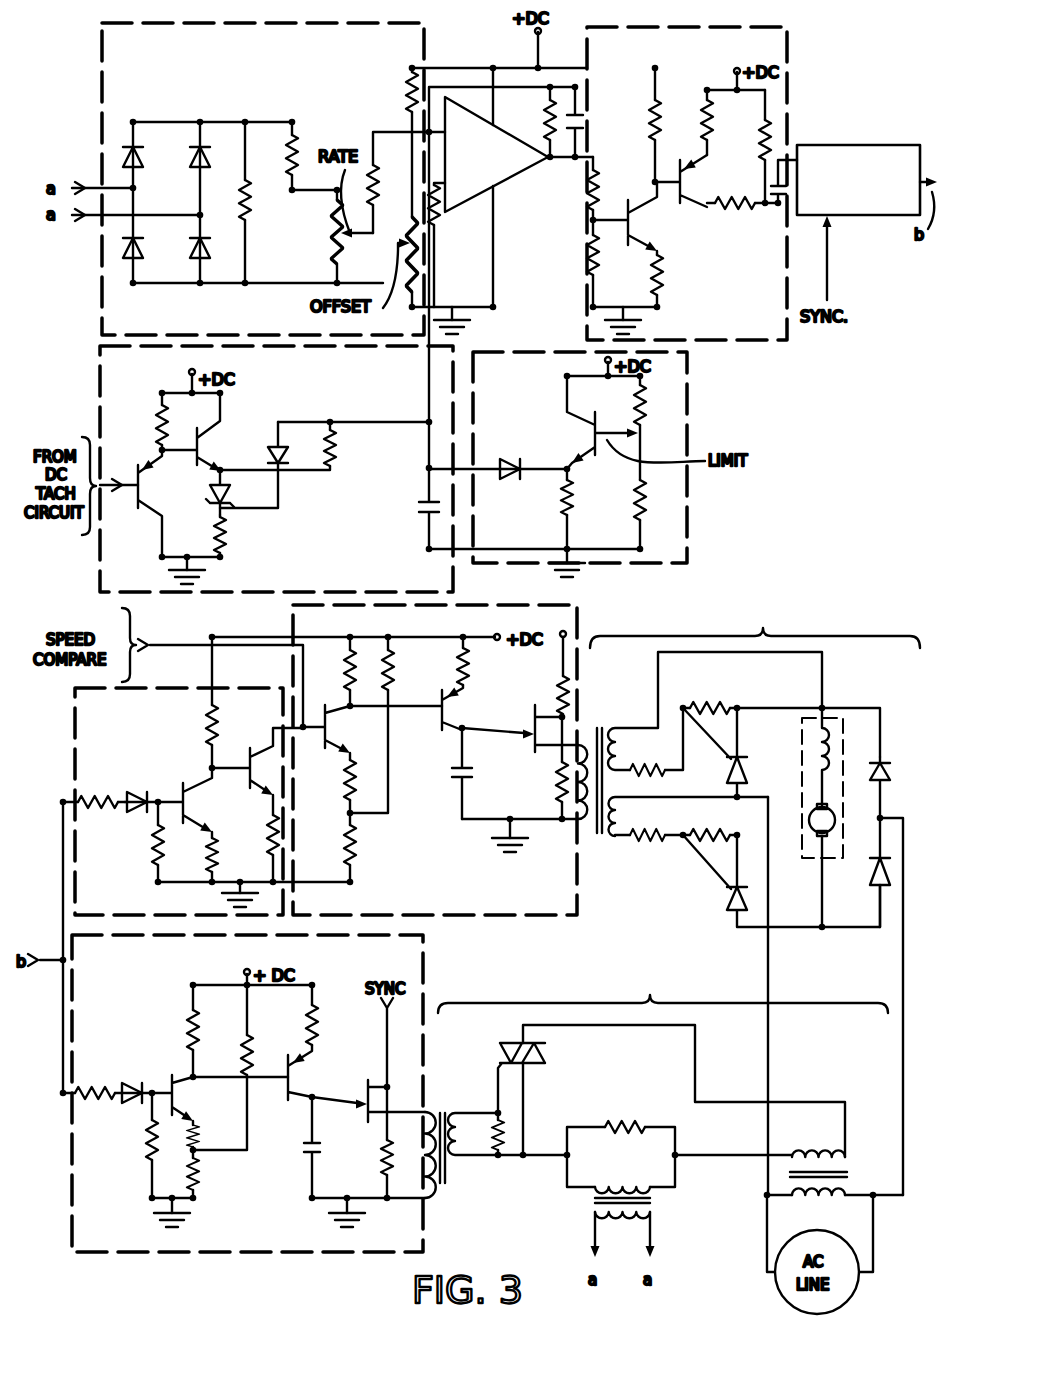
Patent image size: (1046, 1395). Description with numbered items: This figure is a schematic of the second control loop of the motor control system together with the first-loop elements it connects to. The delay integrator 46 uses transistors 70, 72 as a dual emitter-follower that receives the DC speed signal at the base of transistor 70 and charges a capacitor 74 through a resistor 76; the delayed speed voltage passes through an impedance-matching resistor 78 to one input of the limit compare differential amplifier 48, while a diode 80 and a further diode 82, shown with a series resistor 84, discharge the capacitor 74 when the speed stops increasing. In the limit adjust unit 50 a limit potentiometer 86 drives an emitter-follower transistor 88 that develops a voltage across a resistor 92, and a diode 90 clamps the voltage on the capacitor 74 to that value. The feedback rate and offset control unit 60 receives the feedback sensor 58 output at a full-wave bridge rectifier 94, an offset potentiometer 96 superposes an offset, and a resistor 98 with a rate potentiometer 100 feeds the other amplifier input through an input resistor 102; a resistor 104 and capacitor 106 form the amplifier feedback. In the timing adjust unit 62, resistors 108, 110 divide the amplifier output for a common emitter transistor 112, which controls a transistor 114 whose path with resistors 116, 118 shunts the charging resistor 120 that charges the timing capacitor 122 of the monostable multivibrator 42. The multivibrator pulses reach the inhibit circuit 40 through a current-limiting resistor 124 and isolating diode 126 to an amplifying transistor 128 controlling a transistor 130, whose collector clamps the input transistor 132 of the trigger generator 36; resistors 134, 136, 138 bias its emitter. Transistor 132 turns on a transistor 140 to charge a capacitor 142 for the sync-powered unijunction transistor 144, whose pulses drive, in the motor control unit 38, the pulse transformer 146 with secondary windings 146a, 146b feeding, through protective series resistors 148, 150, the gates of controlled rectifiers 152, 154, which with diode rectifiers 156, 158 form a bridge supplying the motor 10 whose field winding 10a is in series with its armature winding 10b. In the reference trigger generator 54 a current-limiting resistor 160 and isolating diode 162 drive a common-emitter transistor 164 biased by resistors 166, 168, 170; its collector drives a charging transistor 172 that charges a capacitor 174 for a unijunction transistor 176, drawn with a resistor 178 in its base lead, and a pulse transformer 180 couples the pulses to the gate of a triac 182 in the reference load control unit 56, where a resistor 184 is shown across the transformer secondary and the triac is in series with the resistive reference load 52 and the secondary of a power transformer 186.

The motor 10 is at (816, 804).
The field winding 10a is at (812, 752).
The armature winding 10b is at (812, 850).
The trigger generator 36 is at (580, 614).
The motor control unit 38 is at (755, 627).
The inhibit circuit 40 is at (186, 689).
The monostable multivibrator 42 is at (885, 145).
The delay integrator 46 is at (100, 397).
The limit compare differential amplifier 48 is at (512, 183).
The limit adjust unit 50 is at (688, 410).
The resistive reference load 52 is at (613, 1125).
The reference trigger generator 54 is at (428, 975).
The reference load control unit 56 is at (663, 994).
The feedback sensor 58 is at (664, 1208).
The feedback rate and offset control unit 60 is at (427, 42).
The timing adjust unit 62 is at (790, 75).
The transistor 70 is at (146, 475).
The transistor 72 is at (216, 447).
The capacitor 74 is at (418, 520).
The resistor 76 is at (340, 455).
The impedance-matching resistor 78 is at (438, 220).
The diode 80 is at (278, 440).
The diode 82 is at (211, 506).
The resistor 84 is at (232, 540).
The limit potentiometer 86 is at (645, 440).
The emitter-follower transistor 88 is at (588, 435).
The diode 90 is at (510, 480).
The resistor 92 is at (578, 497).
The full-wave bridge rectifier 94 is at (202, 120).
The offset potentiometer 96 is at (420, 250).
The resistor 98 is at (297, 158).
The rate potentiometer 100 is at (333, 233).
The input resistor 102 is at (378, 195).
The resistor 104 is at (546, 128).
The capacitor 106 is at (587, 115).
The resistor 108 is at (597, 180).
The resistor 110 is at (590, 256).
The common emitter transistor 112 is at (625, 220).
The transistor 114 is at (690, 165).
The resistor 116 is at (705, 128).
The resistor 118 is at (738, 212).
The charging resistor 120 is at (762, 150).
The capacitor 122 is at (777, 160).
The current-limiting resistor 124 is at (118, 771).
The isolating diode 126 is at (137, 815).
The amplifying transistor 128 is at (206, 798).
The transistor 130 is at (262, 748).
The input transistor 132 is at (333, 742).
The resistor 134 is at (393, 692).
The grounded resistor 136 is at (357, 853).
The resistor 138 is at (346, 790).
The transistor 140 is at (456, 720).
The capacitor 142 is at (470, 774).
The unijunction transistor 144 is at (531, 722).
The pulse transformer 146 is at (692, 744).
The secondary winding 146a is at (625, 748).
The secondary winding 146b is at (625, 813).
The protective series resistor 148 is at (652, 776).
The protective series resistor 150 is at (652, 842).
The controlled rectifier 152 is at (742, 762).
The controlled rectifier 154 is at (726, 906).
The diode rectifier 156 is at (889, 766).
The diode rectifier 158 is at (873, 882).
The current-limiting resistor 160 is at (106, 1088).
The isolating diode 162 is at (134, 1108).
The common-emitter transistor 164 is at (186, 1099).
The resistor 166 is at (254, 1058).
The resistor 168 is at (197, 1130).
The resistor 170 is at (200, 1173).
The charging transistor 172 is at (300, 1070).
The capacitor 174 is at (304, 1150).
The unijunction transistor 176 is at (362, 1101).
The resistor 178 is at (382, 1163).
The pulse transformer 180 is at (453, 1160).
The triac 182 is at (498, 1053).
The resistor 184 is at (490, 1118).
The power transformer 186 is at (855, 1175).